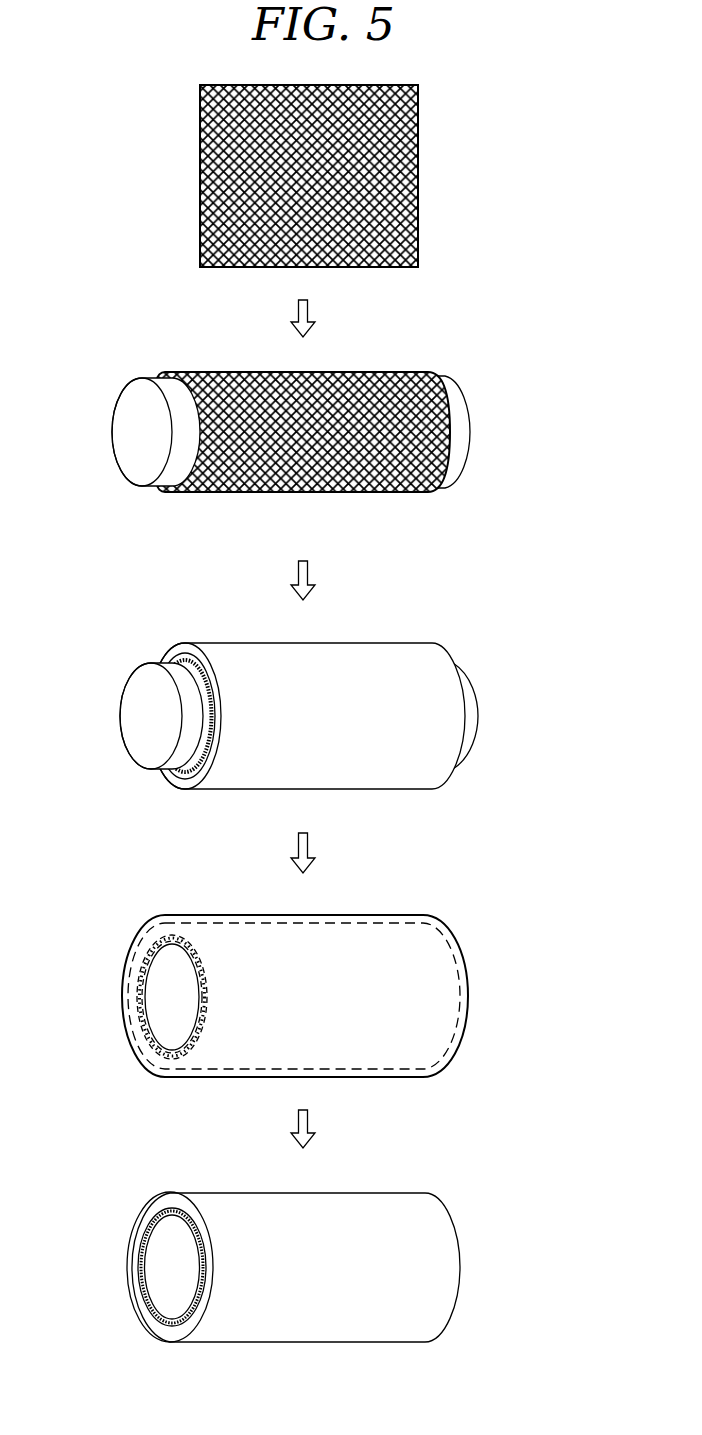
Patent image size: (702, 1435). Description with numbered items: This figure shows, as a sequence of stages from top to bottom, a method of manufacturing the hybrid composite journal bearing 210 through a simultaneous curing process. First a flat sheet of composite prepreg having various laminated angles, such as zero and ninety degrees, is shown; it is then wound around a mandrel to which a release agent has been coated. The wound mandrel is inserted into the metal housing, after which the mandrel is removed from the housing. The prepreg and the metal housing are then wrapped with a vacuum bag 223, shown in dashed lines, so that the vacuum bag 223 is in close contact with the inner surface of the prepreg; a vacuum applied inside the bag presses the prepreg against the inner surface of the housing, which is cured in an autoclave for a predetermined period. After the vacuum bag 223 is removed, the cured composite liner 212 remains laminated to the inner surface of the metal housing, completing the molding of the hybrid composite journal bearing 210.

The hybrid composite journal bearing 210 is at (303, 1231).
The composite liner 212 is at (183, 1215).
The vacuum bag 223 is at (457, 955).